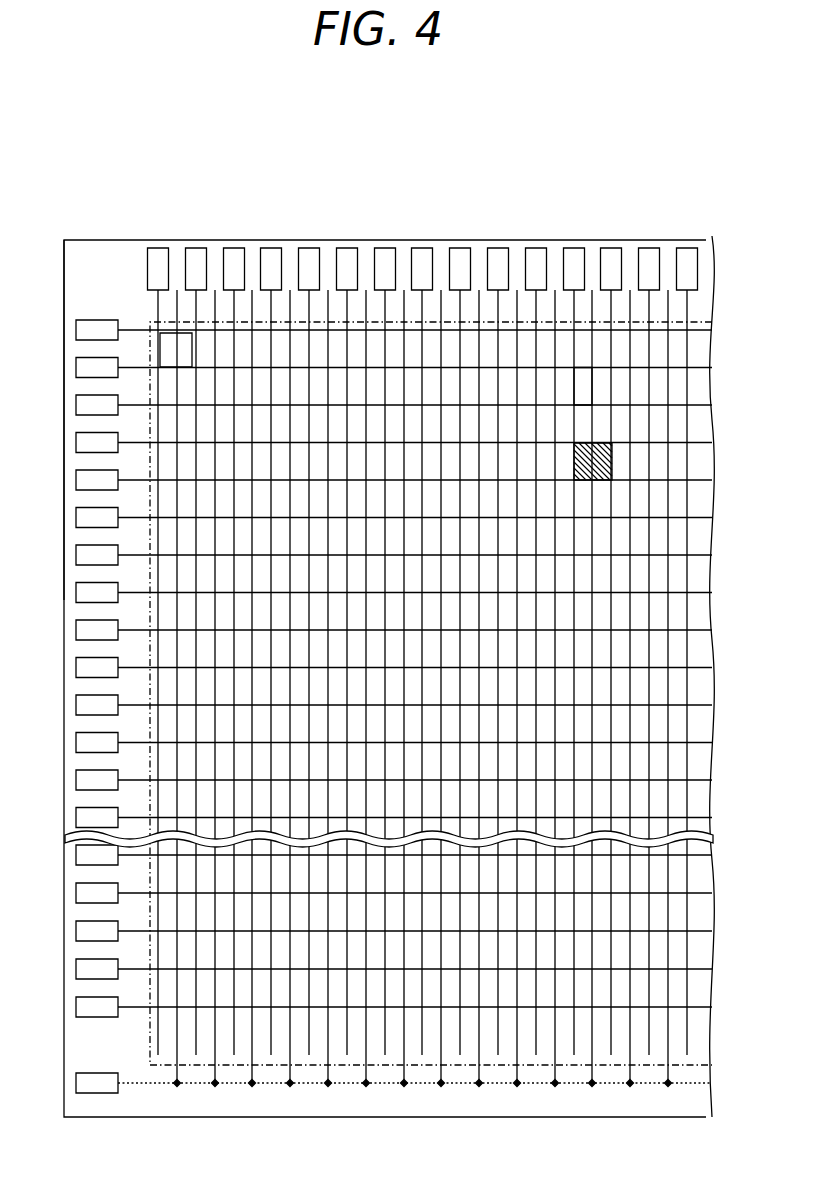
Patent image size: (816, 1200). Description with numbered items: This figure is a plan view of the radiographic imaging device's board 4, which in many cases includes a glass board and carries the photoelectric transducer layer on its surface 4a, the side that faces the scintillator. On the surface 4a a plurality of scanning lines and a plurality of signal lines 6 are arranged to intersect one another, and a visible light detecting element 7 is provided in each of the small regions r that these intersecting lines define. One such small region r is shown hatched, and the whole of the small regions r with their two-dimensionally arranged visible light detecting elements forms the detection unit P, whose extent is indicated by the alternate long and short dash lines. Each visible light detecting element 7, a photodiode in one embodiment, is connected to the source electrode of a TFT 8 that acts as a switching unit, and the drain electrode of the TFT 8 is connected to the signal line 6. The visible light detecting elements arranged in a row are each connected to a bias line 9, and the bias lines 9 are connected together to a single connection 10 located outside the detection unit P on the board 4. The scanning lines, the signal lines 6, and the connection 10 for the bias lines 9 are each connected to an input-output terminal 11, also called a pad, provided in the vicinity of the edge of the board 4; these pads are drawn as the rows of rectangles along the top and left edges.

The board 4 is at (374, 206).
The surface 4a is at (105, 254).
The signal lines 6 is at (421, 305).
The visible light detecting element 7 is at (137, 232).
The TFT 8 is at (158, 336).
The bias line 9 is at (284, 1052).
The connection 10 is at (484, 1086).
The input-output terminal 11 is at (270, 247).
The detection unit P is at (585, 388).
The small region r is at (612, 460).